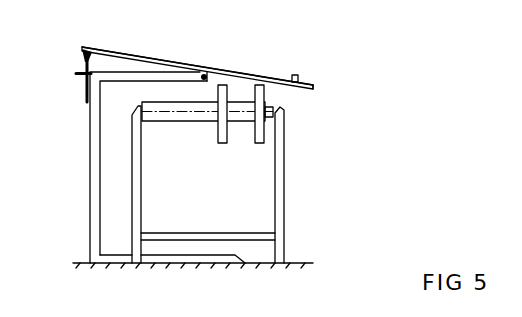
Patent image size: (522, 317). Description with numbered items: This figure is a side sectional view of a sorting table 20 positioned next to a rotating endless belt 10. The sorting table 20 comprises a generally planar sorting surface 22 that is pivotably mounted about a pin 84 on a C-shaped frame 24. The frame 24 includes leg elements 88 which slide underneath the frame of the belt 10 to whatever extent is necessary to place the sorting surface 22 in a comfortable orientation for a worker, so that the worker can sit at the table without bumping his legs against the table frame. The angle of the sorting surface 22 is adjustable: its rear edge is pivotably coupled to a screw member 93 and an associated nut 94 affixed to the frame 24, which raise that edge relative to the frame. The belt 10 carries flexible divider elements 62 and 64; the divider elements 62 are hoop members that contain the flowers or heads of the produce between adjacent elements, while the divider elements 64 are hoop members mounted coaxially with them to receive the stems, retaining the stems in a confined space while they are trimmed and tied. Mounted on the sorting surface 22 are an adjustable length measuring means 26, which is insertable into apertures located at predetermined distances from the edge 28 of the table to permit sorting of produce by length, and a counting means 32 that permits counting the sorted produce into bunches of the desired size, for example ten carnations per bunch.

The endless belt 10 is at (169, 118).
The sorting table 20 is at (278, 61).
The sorting surface 22 is at (133, 55).
The C-shaped frame 24 is at (90, 118).
The length measuring means 26 is at (170, 48).
The edge of the table 28 is at (316, 90).
The counting means 32 is at (300, 77).
The divider elements 62 is at (223, 143).
The divider elements 64 is at (257, 143).
The pin 84 is at (229, 70).
The leg elements 88 is at (188, 266).
The screw member 93 is at (81, 55).
The nut 94 is at (77, 76).